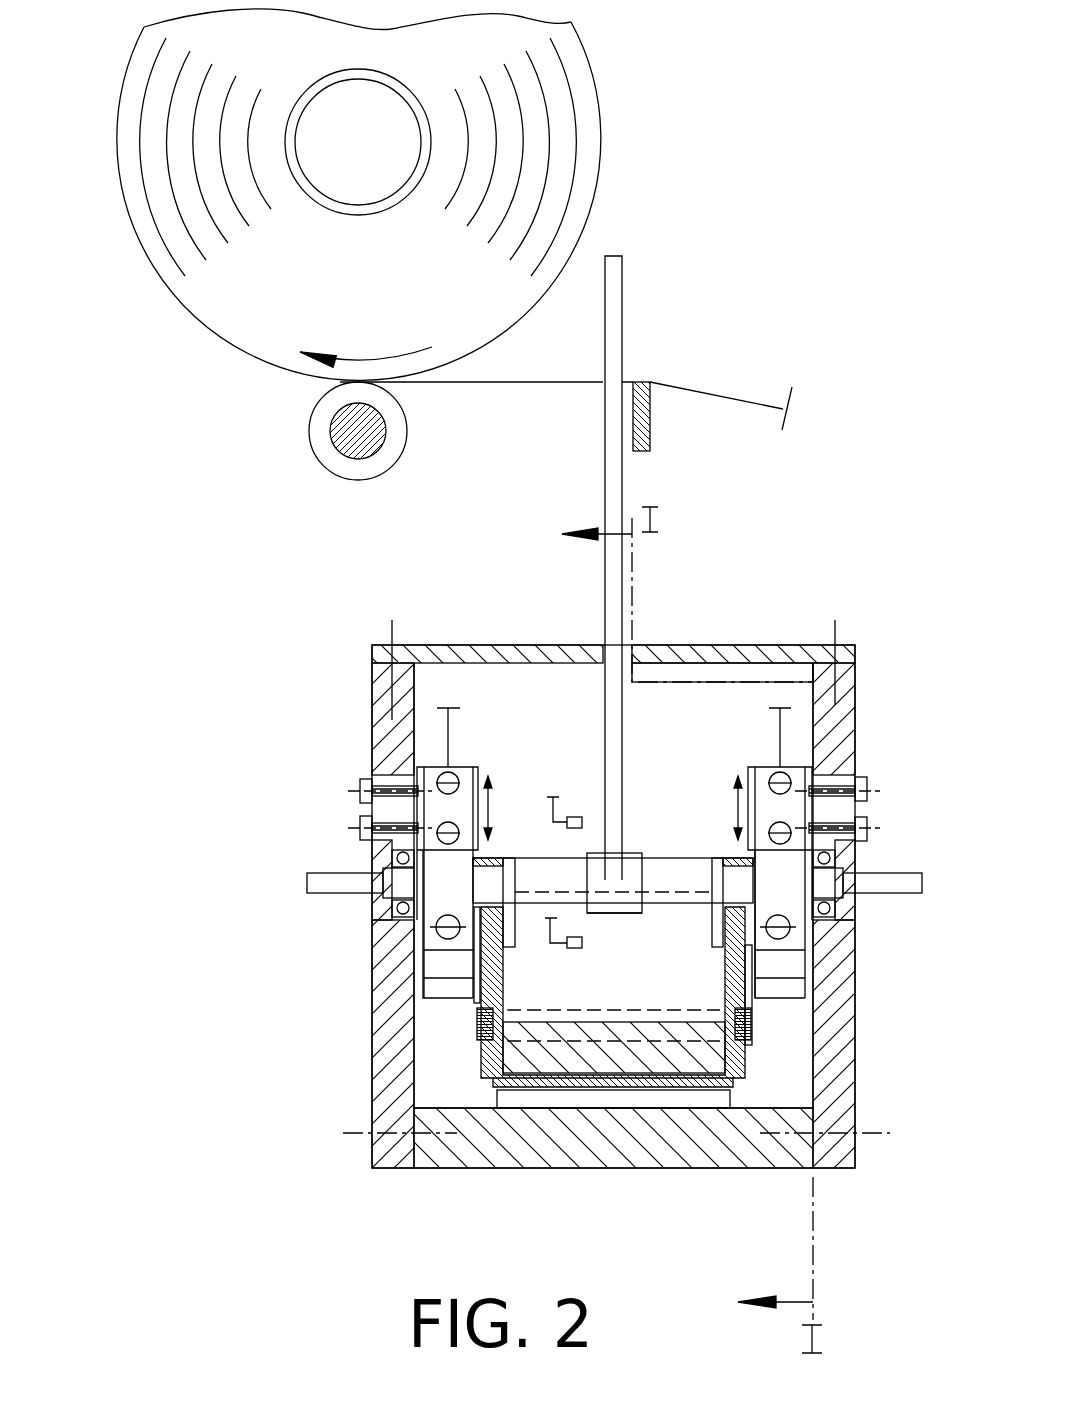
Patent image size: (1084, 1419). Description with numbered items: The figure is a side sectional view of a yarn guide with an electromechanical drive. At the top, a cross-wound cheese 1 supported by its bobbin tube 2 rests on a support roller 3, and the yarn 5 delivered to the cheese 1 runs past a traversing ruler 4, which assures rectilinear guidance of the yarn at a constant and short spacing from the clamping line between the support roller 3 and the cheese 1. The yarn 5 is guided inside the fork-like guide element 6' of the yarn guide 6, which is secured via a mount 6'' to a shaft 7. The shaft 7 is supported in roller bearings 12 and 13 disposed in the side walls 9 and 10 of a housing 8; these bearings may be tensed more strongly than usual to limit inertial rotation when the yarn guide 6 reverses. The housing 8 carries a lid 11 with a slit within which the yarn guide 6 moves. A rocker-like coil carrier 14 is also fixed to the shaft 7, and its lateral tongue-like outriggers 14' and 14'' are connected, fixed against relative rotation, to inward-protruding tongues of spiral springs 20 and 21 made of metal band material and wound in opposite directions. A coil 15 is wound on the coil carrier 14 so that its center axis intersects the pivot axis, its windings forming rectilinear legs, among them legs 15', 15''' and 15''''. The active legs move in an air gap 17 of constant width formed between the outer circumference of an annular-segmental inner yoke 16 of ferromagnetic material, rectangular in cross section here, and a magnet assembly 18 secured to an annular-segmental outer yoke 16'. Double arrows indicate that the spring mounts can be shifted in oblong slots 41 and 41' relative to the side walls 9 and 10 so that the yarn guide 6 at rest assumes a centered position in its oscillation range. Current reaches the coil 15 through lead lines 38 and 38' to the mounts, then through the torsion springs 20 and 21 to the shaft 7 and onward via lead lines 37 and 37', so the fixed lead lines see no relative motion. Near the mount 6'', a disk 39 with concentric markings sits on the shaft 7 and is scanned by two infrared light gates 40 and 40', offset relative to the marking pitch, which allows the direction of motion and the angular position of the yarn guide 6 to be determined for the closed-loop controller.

The cheese 1 is at (552, 162).
The bobbin tube 2 is at (416, 113).
The support roller 3 is at (383, 457).
The traversing ruler 4 is at (650, 422).
The yarn 5 is at (742, 402).
The yarn guide 6 is at (576, 631).
The fork-like guide element 6' is at (687, 469).
The mount 6'' is at (626, 843).
The shaft 7 is at (670, 875).
The housing 8 is at (881, 628).
The side wall 9 is at (840, 738).
The side wall 10 is at (393, 748).
The lid 11 is at (697, 647).
The roller bearing 12 is at (835, 853).
The roller bearing 13 is at (395, 908).
The coil carrier 14 is at (695, 1087).
The outrigger 14' is at (713, 951).
The outrigger 14'' is at (516, 930).
The coil 15 is at (692, 997).
The leg 15' is at (613, 972).
The leg 15''' is at (827, 1030).
The leg 15'''' is at (453, 1053).
The inner yoke 16 is at (652, 1047).
The outer yoke 16' is at (613, 1165).
The air gap 17 is at (486, 1098).
The magnet assembly 18 is at (712, 1097).
The spiral spring 20 is at (792, 963).
The spiral spring 21 is at (445, 985).
The lead line 37 is at (396, 882).
The lead line 37' is at (828, 967).
The lead line 38 is at (472, 735).
The lead line 38' is at (747, 735).
The disk 39 is at (587, 937).
The infrared light gate 40 is at (570, 795).
The infrared light gate 40' is at (572, 960).
The oblong slot 41 is at (861, 807).
The oblong slot 41' is at (355, 809).